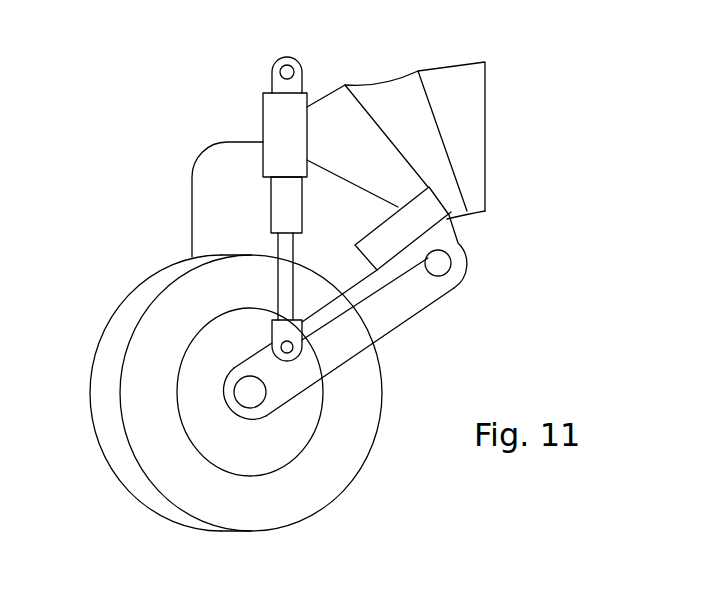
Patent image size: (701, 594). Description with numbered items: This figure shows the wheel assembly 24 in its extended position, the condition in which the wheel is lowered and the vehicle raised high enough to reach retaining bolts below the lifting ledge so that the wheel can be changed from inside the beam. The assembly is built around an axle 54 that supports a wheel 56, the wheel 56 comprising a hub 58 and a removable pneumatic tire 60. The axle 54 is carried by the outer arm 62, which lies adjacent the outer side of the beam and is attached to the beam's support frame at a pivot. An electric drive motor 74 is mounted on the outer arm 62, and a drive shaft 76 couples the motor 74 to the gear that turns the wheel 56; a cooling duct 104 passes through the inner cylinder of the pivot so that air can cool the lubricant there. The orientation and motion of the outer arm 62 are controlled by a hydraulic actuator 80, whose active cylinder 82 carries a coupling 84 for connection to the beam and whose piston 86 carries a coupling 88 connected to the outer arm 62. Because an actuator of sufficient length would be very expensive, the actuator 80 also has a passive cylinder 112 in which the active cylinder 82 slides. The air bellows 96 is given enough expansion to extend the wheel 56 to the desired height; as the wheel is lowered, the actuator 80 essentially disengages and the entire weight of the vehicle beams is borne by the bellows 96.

The wheel assembly 24 is at (93, 407).
The axle 54 is at (250, 397).
The wheel 56 is at (133, 387).
The hub 58 is at (192, 367).
The pneumatic tire 60 is at (165, 308).
The outer arm 62 is at (402, 297).
The electric drive motor 74 is at (450, 222).
The drive shaft 76 is at (337, 287).
The hydraulic actuator 80 is at (277, 163).
The active cylinder 82 is at (277, 210).
The coupling 84 is at (287, 57).
The piston 86 is at (277, 273).
The coupling 88 is at (337, 362).
The air bellows 96 is at (386, 82).
The cooling duct 104 is at (449, 259).
The passive cylinder 112 is at (270, 110).